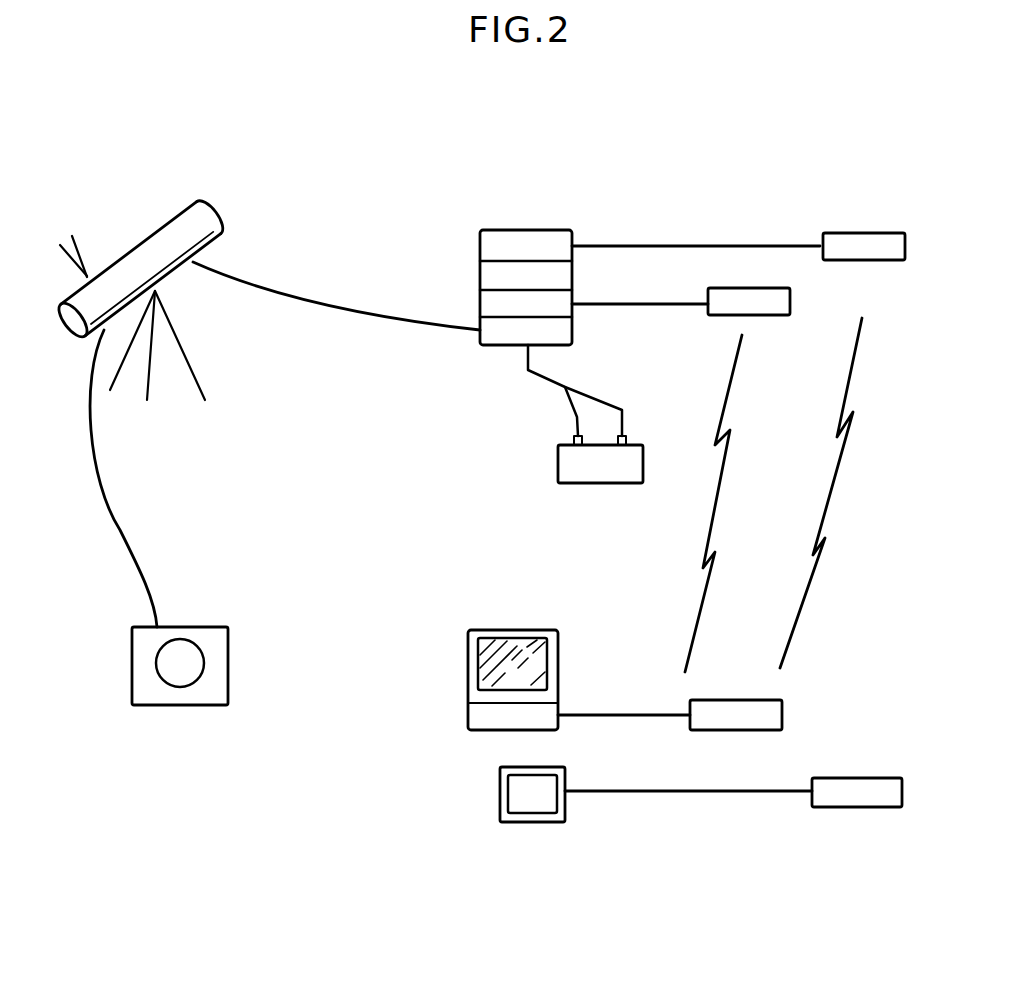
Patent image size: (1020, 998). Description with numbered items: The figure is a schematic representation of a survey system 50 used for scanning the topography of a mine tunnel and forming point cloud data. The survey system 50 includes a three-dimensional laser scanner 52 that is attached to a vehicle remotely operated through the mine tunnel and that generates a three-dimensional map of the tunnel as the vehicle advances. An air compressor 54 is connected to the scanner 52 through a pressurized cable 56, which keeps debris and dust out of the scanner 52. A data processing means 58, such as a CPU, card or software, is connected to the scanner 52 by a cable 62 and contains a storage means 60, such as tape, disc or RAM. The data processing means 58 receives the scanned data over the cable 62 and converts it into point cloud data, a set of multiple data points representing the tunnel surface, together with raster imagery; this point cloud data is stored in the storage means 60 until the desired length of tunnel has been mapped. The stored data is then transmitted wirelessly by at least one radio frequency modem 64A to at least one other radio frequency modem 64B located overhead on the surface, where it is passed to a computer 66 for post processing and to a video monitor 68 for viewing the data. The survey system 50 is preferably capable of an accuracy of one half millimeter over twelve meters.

The survey system 50 is at (449, 168).
The three-dimensional laser scanner 52 is at (200, 232).
The air compressor 54 is at (218, 648).
The pressurized cable 56 is at (127, 528).
The data processing means 58 is at (527, 206).
The storage means 60 is at (493, 273).
The cable 62 is at (292, 298).
The radio frequency modem 64A is at (783, 305).
The radio frequency modem 64B is at (755, 720).
The computer 66 is at (514, 628).
The video monitor 68 is at (498, 798).